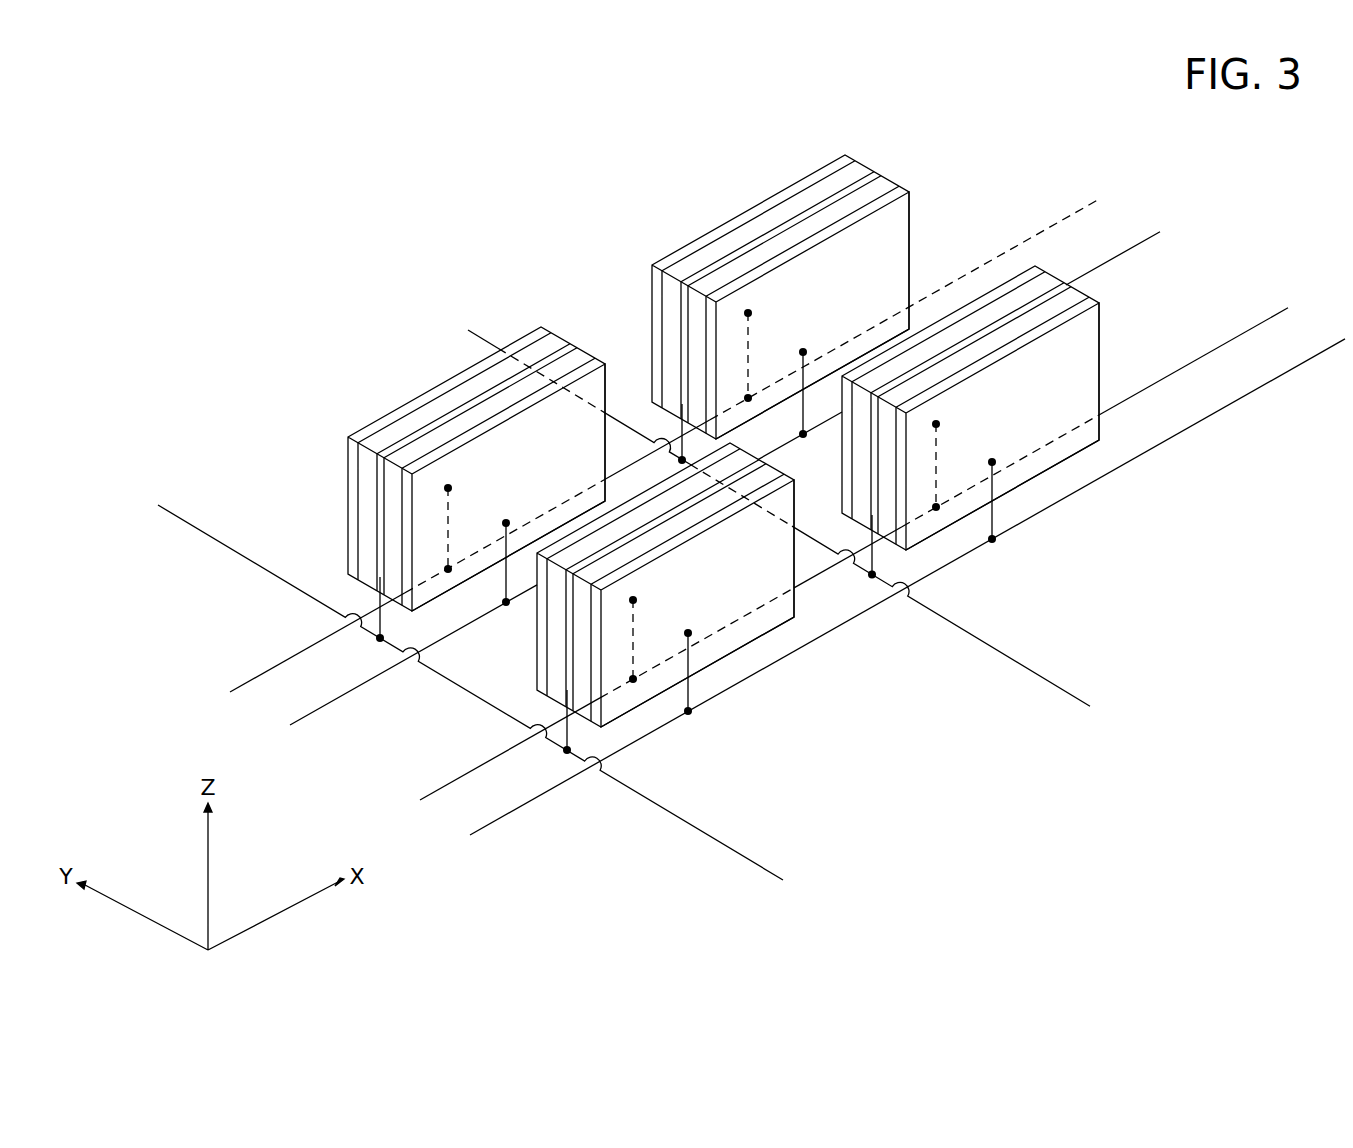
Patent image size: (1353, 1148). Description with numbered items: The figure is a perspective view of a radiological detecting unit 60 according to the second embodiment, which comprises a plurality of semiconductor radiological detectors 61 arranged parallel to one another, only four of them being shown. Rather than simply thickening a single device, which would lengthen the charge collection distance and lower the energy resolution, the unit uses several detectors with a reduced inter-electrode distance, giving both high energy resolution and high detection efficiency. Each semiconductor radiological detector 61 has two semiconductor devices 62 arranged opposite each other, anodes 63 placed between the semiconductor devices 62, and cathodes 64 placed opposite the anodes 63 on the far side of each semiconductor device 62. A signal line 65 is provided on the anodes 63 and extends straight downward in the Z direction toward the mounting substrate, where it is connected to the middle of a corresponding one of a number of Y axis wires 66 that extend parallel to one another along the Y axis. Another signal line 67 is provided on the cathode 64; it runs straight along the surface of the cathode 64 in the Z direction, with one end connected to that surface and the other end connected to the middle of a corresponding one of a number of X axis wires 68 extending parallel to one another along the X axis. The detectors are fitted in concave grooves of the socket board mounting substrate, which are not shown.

The radiological detecting unit 60 is at (566, 228).
The semiconductor radiological detector 61 is at (382, 408).
The semiconductor device 62 is at (463, 432).
The anode 63 is at (735, 250).
The cathode 64 is at (723, 607).
The signal line 65 is at (383, 617).
The Y axis wire 66 is at (212, 535).
The signal line 67 is at (503, 577).
The X axis wire 68 is at (1067, 212).